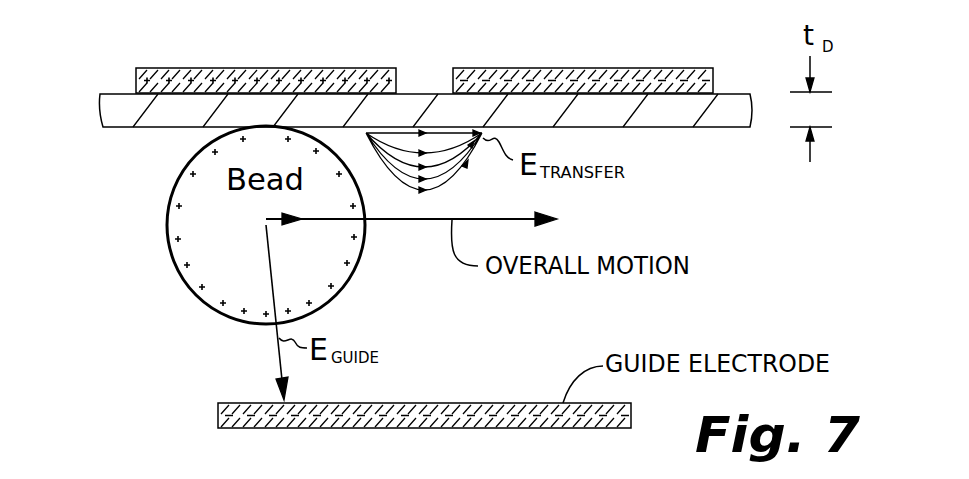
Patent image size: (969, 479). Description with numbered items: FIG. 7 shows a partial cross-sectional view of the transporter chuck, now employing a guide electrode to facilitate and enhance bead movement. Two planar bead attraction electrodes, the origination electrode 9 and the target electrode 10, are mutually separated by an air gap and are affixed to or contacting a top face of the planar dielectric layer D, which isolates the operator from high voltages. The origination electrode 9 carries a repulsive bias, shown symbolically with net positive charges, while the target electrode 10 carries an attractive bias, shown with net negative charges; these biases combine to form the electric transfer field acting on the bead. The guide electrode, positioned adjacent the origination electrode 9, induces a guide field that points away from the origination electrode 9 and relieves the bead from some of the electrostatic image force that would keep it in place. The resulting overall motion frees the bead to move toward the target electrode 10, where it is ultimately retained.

The origination electrode 9 is at (158, 78).
The target electrode 10 is at (673, 68).
The dielectric layer D is at (106, 114).